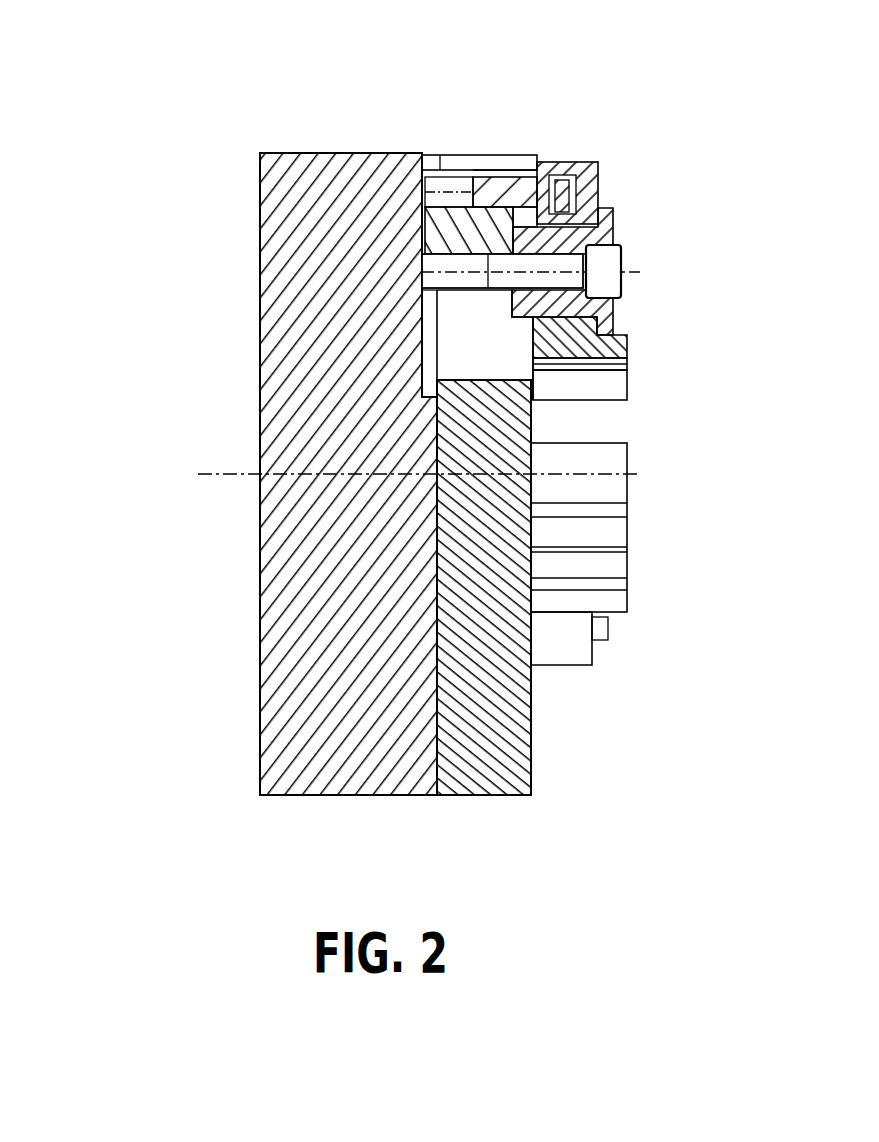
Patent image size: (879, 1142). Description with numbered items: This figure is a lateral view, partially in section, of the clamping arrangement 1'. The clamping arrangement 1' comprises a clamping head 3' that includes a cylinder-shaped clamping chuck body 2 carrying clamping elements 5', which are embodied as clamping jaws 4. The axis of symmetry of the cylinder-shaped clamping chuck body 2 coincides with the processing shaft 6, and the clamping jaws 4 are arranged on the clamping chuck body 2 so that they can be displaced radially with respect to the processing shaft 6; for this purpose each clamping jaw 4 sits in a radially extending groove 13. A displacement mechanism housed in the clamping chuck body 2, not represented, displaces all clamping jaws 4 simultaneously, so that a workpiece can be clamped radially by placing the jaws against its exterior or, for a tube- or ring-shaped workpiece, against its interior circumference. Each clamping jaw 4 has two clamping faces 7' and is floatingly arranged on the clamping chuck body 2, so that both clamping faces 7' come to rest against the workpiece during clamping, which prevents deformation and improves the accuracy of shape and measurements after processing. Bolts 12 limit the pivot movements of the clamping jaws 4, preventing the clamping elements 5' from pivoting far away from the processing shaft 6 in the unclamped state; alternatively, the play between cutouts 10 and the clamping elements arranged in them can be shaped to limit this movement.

The clamping arrangement 1' is at (388, 171).
The clamping chuck body 2 is at (210, 252).
The clamping head 3' is at (578, 591).
The clamping jaw 4 is at (573, 345).
The clamping element 5' is at (642, 211).
The processing shaft 6 is at (215, 472).
The clamping face 7' is at (648, 517).
The cutout 10 is at (602, 365).
The bolt 12 is at (527, 178).
The groove 13 is at (459, 355).